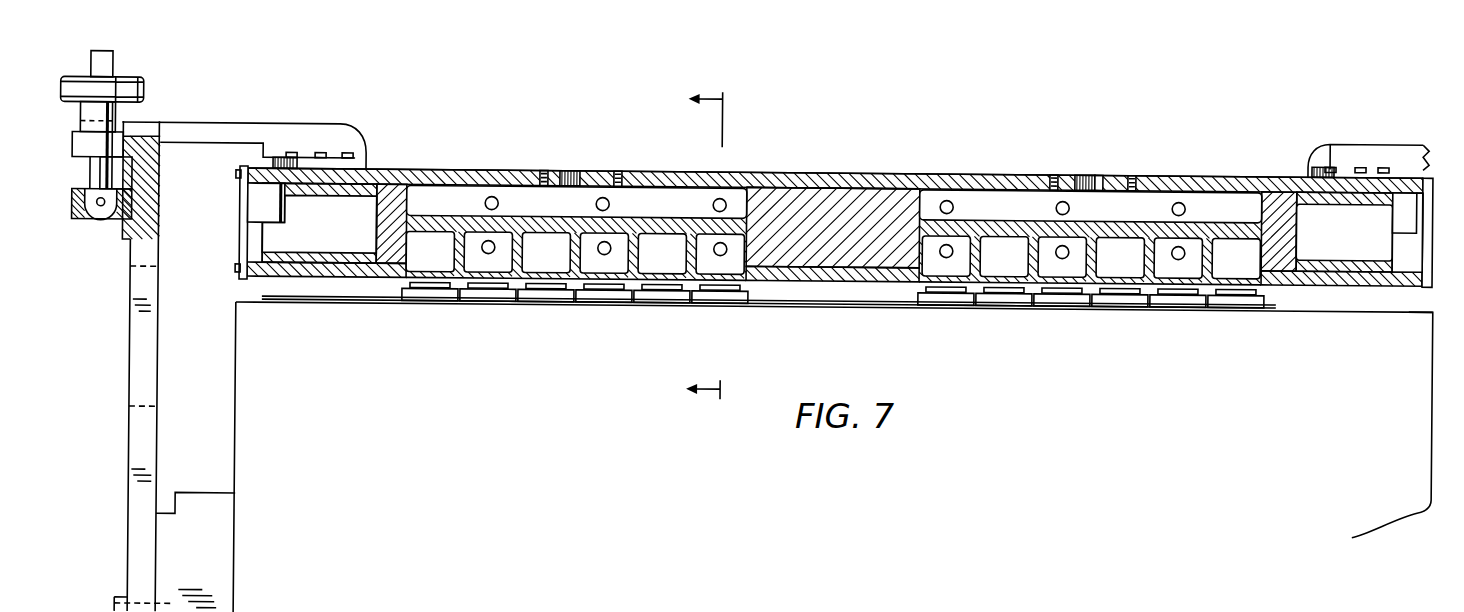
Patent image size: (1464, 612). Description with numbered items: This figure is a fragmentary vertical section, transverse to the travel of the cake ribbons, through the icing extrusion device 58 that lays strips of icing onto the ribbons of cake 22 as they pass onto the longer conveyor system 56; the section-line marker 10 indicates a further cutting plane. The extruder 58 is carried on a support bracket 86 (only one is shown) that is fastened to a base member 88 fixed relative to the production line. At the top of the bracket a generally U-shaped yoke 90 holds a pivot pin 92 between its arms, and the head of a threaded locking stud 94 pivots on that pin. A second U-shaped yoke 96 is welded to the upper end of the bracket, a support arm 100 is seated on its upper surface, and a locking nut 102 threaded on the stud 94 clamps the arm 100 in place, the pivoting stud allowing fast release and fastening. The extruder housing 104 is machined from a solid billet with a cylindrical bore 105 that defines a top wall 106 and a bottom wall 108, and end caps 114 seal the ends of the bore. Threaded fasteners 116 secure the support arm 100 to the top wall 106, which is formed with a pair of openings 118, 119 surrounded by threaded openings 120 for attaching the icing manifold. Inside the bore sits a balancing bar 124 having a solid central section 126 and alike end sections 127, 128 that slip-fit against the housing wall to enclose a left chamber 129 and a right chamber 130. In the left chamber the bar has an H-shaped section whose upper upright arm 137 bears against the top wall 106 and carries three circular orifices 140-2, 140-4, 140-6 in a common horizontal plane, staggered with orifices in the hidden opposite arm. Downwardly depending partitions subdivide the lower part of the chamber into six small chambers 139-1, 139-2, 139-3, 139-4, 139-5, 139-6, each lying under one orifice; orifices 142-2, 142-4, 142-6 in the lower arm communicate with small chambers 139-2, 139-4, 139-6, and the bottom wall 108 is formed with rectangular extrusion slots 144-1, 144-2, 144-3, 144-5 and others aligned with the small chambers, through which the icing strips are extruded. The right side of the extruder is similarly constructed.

The section line 10- 10 is at (691, 243).
The cake 22 is at (1278, 305).
The conveyor system 56 is at (1409, 309).
The extrusion device 58 is at (912, 121).
The support bracket 86 is at (160, 350).
The base member 88 is at (225, 580).
The U-shaped yoke 90 is at (77, 213).
The pivot pin 92 is at (100, 220).
The threaded locking stud 94 is at (100, 172).
The second U-shaped yoke 96 is at (72, 157).
The support arm 100 is at (220, 130).
The locking nut 102 is at (145, 90).
The housing 104 is at (854, 160).
The cylindrical bore 105 is at (1397, 243).
The top wall 106 is at (1228, 180).
The bottom wall 108 is at (1330, 290).
The end caps 114 is at (247, 218).
The threaded fasteners 116 is at (347, 152).
The opening 118 is at (600, 172).
The opening 119 is at (1104, 180).
The threaded openings 120 is at (544, 169).
The balancing bar 124 is at (1293, 226).
The solid central section 126 is at (920, 315).
The end section 127 is at (397, 200).
The end section 128 is at (1282, 200).
The left chamber 129 is at (683, 214).
The right chamber 130 is at (1240, 219).
The upper upright arm 137 is at (750, 180).
The small chamber 139-1 is at (405, 272).
The small chamber 139-2 is at (496, 272).
The small chamber 139-3 is at (556, 272).
The small chamber 139-4 is at (628, 272).
The small chamber 139-5 is at (695, 280).
The small chamber 139-6 is at (750, 275).
The circular orifice 140-2 is at (490, 198).
The circular orifice 140-4 is at (597, 204).
The circular orifice 140-6 is at (721, 196).
The orifice 142-2 is at (488, 252).
The orifice 142-4 is at (605, 252).
The orifice 142-6 is at (721, 252).
The extrusion slot 144-1 is at (452, 272).
The extrusion slot 144-2 is at (500, 282).
The extrusion slot 144-3 is at (483, 272).
The extrusion slot 144-5 is at (676, 272).